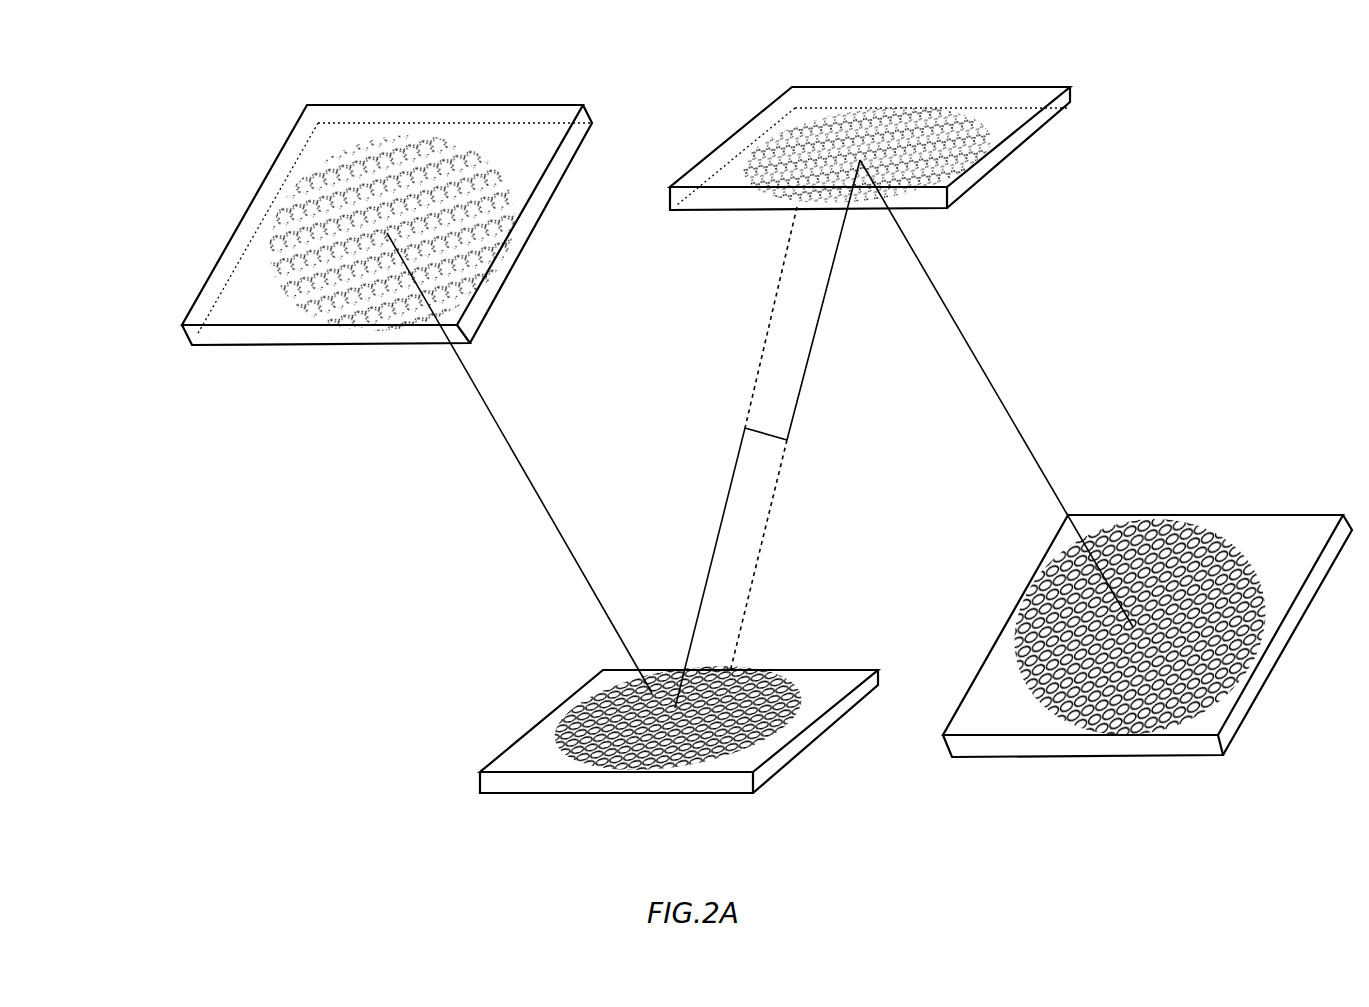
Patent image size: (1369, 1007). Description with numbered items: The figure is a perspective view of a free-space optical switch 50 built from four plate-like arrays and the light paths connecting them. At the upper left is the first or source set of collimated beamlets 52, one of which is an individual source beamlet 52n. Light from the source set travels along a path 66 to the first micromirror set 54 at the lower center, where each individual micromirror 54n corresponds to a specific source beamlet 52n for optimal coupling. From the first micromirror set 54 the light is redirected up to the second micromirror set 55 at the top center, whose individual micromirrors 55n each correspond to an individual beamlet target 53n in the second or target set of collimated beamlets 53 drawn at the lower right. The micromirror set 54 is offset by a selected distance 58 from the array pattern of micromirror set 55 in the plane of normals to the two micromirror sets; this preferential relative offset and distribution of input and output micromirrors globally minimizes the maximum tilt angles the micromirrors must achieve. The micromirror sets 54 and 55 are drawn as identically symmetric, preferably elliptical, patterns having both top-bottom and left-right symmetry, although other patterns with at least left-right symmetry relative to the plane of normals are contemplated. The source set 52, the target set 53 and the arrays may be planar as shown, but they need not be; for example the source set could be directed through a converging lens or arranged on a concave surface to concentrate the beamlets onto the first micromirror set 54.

The optical switch 50 is at (146, 541).
The first or source set of collimated beamlets 52 is at (253, 347).
The source beamlet 52n is at (367, 333).
The second or target set of collimated beamlets 53 is at (1290, 511).
The beamlet target 53n is at (1197, 530).
The first micromirror set 54 is at (620, 797).
The micromirror 54n is at (753, 672).
The second micromirror set 55 is at (923, 83).
The micromirror 55n is at (796, 212).
The selected distance 58 is at (737, 426).
The optical path 66 is at (544, 502).